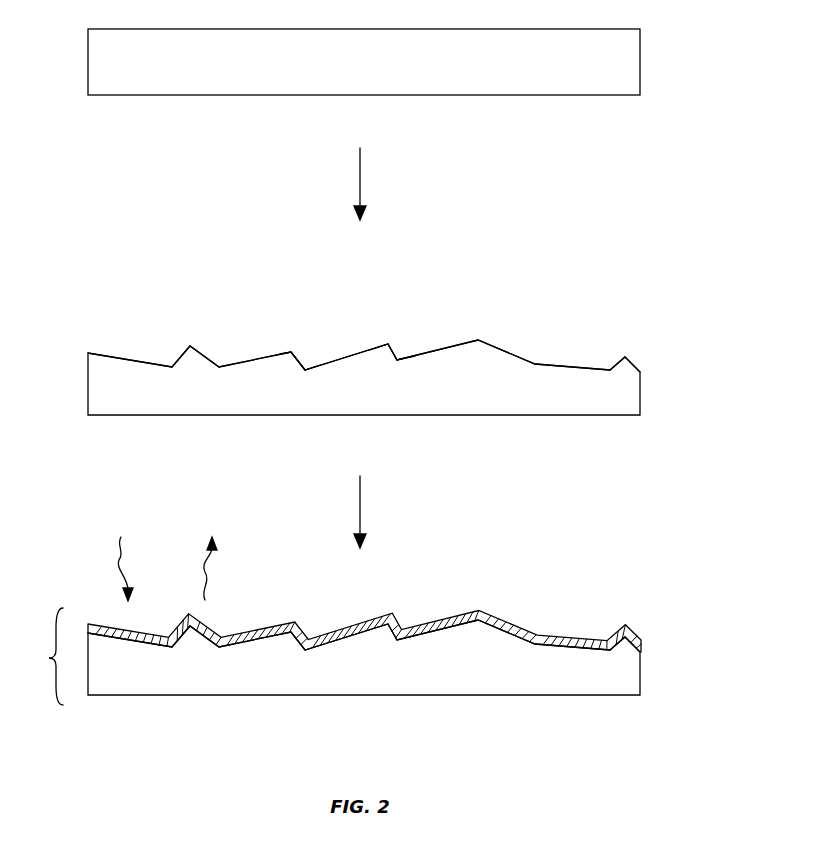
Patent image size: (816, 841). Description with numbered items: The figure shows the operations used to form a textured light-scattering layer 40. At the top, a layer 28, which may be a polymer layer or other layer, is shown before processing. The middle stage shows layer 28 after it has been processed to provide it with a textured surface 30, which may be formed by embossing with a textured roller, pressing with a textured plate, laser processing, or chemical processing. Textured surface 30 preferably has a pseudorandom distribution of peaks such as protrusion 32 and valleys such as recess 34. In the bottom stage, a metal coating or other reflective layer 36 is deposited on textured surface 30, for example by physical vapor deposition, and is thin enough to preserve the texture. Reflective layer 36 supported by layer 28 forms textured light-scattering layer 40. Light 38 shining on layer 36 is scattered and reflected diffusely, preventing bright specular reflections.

The layer 28 is at (640, 53).
The textured surface 30 is at (508, 352).
The protrusion 32 is at (388, 330).
The recess 34 is at (306, 346).
The reflective layer 36 is at (507, 620).
The light 38 is at (113, 560).
The textured light-scattering layer 40 is at (40, 656).